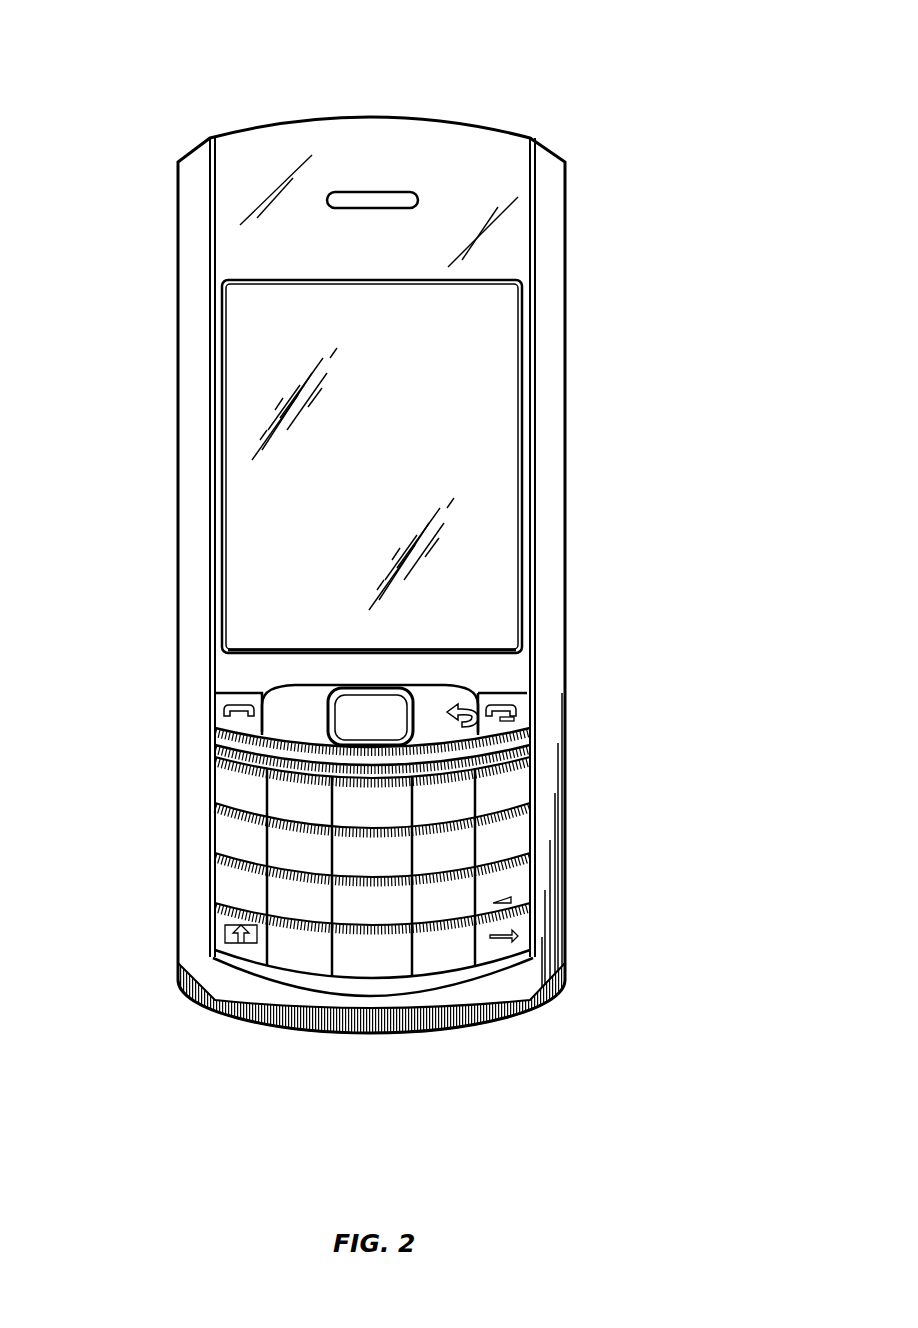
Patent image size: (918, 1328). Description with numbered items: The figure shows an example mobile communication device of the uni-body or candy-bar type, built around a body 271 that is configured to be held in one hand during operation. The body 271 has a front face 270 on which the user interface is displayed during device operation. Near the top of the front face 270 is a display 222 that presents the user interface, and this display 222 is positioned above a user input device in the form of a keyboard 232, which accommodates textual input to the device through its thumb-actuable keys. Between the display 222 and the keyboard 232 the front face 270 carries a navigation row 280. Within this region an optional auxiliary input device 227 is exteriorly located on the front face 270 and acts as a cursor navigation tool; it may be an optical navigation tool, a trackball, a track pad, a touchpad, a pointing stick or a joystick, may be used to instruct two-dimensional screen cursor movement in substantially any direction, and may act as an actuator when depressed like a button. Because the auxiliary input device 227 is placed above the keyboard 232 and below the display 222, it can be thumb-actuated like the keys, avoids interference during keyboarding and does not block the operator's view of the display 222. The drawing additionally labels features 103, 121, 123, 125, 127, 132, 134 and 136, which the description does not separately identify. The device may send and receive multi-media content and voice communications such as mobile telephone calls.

The mobile communication device 103 is at (516, 54).
The body 271 is at (166, 160).
The front face 270 is at (552, 195).
The display 222 is at (247, 319).
The navigation row 280 is at (200, 742).
The send/call key 121 is at (240, 697).
The navigation plate 123 is at (300, 700).
The trackball navigation tool 134 is at (352, 689).
The escape/back key 125 is at (443, 697).
The end key 127 is at (505, 700).
The keyboard 136 is at (370, 712).
The keys 132 is at (362, 752).
The auxiliary input device 227 is at (347, 726).
The keyboard 232 is at (387, 1000).